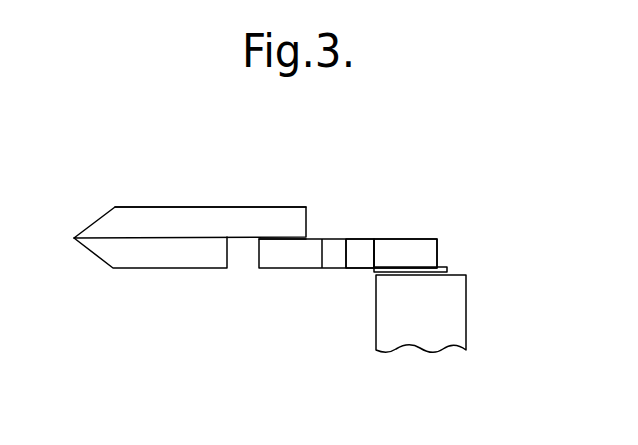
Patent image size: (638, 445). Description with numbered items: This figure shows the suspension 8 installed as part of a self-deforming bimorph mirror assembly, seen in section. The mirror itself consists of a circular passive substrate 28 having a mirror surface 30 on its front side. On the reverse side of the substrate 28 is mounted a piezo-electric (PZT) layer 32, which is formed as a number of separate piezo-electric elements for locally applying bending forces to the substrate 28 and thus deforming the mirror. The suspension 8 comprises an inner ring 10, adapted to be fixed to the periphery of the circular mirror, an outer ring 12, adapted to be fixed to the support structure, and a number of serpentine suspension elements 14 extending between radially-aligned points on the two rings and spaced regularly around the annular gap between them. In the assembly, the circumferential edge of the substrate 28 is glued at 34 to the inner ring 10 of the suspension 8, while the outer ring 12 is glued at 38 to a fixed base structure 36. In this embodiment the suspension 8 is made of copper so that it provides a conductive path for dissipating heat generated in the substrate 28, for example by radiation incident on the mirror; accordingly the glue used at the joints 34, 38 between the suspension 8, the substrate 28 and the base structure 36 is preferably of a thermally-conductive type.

The suspension 8 is at (337, 292).
The inner ring 10 is at (285, 257).
The outer ring 12 is at (417, 247).
The serpentine suspension elements 14 is at (362, 255).
The passive substrate 28 is at (157, 217).
The mirror surface 30 is at (200, 210).
The piezo-electric layer 32 is at (147, 253).
The glued joint 34 is at (275, 245).
The fixed base structure 36 is at (430, 318).
The glued joint 38 is at (445, 268).